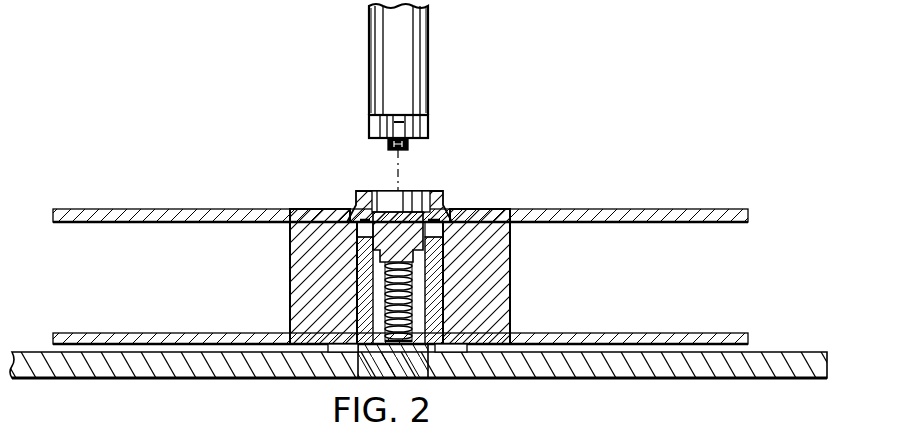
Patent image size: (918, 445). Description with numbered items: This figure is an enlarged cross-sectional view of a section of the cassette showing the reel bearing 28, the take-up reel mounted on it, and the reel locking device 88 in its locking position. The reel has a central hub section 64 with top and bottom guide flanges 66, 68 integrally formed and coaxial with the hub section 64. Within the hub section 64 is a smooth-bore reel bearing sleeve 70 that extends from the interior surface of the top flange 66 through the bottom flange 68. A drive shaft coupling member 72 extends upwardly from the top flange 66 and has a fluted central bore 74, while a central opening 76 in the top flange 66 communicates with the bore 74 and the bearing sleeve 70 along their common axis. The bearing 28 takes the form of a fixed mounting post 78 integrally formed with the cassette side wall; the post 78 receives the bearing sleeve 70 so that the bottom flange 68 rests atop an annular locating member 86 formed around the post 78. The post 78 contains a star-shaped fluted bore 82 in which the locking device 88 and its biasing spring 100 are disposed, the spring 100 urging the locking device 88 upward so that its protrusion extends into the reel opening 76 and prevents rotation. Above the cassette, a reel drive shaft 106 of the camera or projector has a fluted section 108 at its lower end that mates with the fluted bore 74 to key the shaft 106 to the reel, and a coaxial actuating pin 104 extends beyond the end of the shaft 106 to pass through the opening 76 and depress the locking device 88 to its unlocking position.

The reel bearing 28 is at (450, 227).
The central hub section 64 is at (508, 295).
The top guide flange 66 is at (748, 210).
The bottom guide flange 68 is at (745, 334).
The reel bearing sleeve 70 is at (361, 226).
The drive shaft coupling member 72 is at (432, 200).
The fluted central bore 74 is at (379, 193).
The opening 76 is at (412, 200).
The mounting post 78 is at (432, 356).
The star shaped fluted bore 82 is at (420, 276).
The annular locating member 86 is at (323, 351).
The reel locking device 88 is at (360, 245).
The locking device biasing spring 100 is at (405, 314).
The actuating pin 104 is at (408, 143).
The reel drive shaft 106 is at (404, 56).
The fluted section 108 is at (417, 125).